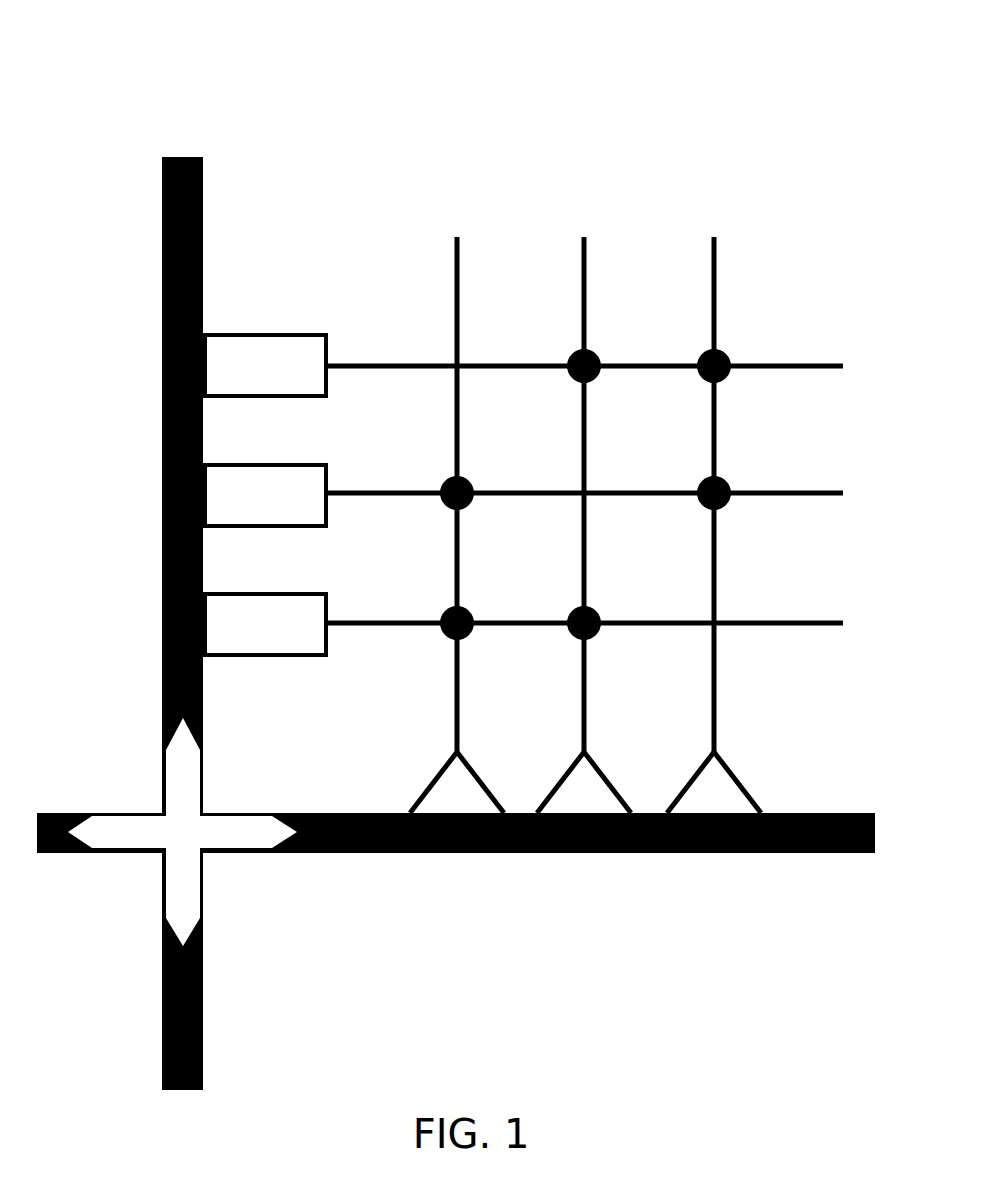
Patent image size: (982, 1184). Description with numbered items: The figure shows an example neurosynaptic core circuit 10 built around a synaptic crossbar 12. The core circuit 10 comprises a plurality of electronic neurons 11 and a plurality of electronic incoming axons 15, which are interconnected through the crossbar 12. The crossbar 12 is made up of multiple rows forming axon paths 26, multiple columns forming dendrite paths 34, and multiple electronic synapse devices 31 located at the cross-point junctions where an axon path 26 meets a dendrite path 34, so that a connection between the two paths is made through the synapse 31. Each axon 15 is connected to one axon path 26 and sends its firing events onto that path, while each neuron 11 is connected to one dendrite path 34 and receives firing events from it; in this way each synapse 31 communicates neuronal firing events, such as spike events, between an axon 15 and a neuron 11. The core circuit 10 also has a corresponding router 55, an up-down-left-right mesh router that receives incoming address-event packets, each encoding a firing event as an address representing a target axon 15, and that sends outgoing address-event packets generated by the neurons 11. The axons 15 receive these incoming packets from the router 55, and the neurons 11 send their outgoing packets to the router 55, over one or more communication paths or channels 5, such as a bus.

The neurosynaptic core circuit 10 is at (470, 56).
The communication paths/channels 5 is at (802, 853).
The router 55 is at (180, 860).
The synaptic crossbar 12 is at (524, 489).
The electronic incoming axons 15 is at (263, 332).
The axon paths 26 is at (763, 492).
The dendrite paths 34 is at (459, 283).
The synapse devices 31 is at (720, 348).
The electronic neurons 11 is at (733, 775).